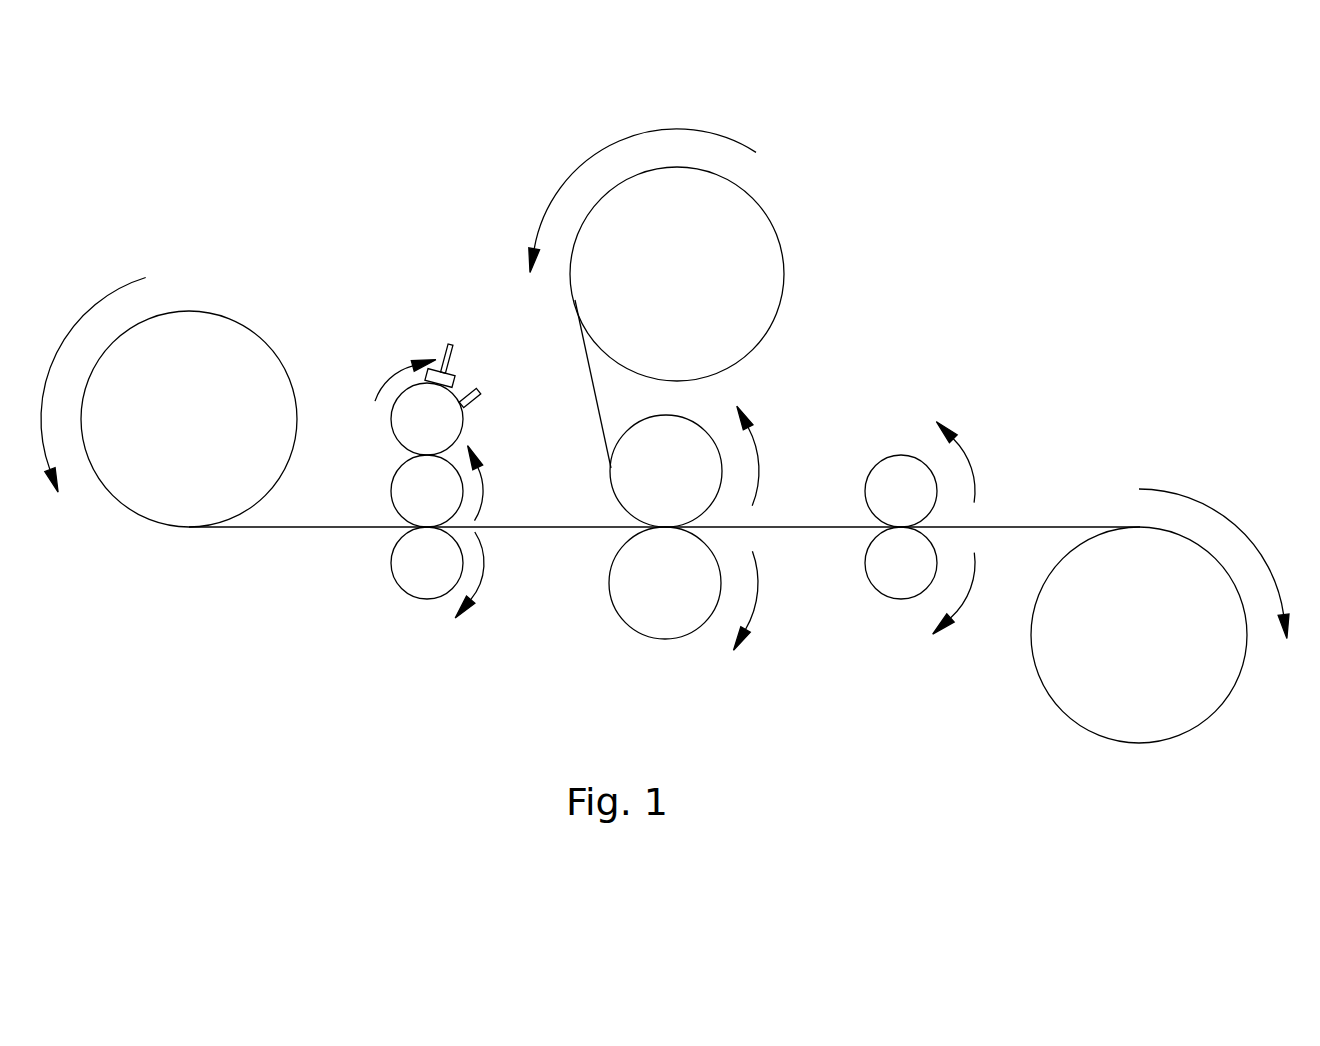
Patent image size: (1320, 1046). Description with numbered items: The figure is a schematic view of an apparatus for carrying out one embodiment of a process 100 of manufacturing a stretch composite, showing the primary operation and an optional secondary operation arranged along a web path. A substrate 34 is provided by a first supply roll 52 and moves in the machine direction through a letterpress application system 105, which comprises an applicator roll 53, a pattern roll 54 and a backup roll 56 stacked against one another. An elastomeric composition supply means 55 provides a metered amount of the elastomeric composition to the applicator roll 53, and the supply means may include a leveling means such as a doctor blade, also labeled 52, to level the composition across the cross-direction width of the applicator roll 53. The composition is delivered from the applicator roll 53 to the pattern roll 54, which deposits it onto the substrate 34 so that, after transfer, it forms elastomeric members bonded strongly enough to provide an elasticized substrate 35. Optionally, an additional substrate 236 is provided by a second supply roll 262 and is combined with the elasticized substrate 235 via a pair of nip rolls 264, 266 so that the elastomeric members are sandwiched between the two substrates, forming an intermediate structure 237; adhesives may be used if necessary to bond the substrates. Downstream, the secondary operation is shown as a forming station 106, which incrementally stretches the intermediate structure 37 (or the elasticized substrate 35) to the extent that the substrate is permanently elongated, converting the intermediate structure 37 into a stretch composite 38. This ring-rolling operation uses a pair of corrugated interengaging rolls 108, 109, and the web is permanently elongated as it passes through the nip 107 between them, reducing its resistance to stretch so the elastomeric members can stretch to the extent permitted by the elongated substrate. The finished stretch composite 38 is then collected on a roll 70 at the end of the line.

The process 100 is at (267, 193).
The letterpress application system 105 is at (389, 250).
The forming station 106 is at (930, 368).
The first supply roll 52 is at (245, 322).
The applicator roll 53 is at (393, 409).
The pattern roll 54 is at (403, 463).
The elastomeric composition supply means 55 is at (442, 357).
The backup roll 56 is at (403, 592).
The substrate 34 is at (308, 527).
The elasticized substrate 35 is at (528, 530).
The elasticized substrate 235 is at (582, 530).
The additional substrate 236 is at (593, 412).
The second supply roll 262 is at (777, 232).
The nip roll 264 is at (620, 506).
The nip roll 266 is at (647, 640).
The intermediate structure 37 is at (762, 527).
The intermediate structure 237 is at (812, 527).
The nip 107 is at (847, 550).
The corrugated interengaging roll 108 is at (870, 473).
The corrugated interengaging roll 109 is at (870, 582).
The stretch composite 38 is at (1017, 527).
The rewind roll 70 is at (1113, 743).